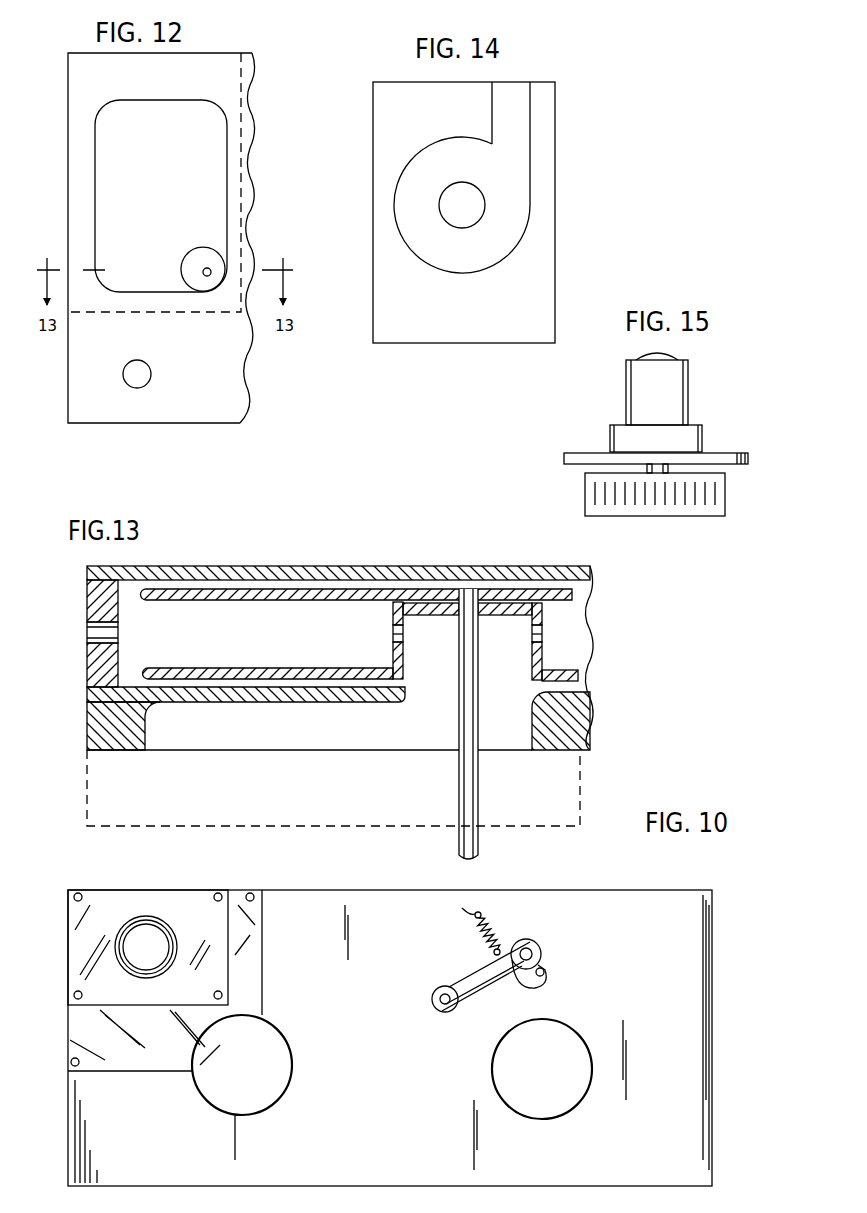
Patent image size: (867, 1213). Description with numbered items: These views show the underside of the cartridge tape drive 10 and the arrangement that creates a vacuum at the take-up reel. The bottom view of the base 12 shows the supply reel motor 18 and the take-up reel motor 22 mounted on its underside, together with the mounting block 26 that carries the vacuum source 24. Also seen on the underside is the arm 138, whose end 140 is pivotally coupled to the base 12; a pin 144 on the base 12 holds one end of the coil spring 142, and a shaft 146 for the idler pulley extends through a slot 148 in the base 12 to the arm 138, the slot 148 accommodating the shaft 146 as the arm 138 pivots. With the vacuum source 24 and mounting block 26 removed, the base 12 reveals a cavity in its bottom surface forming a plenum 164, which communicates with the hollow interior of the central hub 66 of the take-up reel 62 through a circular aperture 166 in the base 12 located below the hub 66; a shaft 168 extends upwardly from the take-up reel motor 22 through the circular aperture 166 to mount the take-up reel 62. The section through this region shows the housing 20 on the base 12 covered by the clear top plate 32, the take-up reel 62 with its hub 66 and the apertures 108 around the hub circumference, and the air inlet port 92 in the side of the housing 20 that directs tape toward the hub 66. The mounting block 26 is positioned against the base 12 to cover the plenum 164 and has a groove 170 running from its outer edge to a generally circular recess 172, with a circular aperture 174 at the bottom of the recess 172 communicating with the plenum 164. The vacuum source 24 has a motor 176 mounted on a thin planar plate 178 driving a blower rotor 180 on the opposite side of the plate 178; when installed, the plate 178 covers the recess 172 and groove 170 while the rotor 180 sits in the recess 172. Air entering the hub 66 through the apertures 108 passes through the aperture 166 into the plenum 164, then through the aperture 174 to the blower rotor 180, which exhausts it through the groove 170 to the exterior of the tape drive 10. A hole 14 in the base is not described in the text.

In FIG. 10, the cartridge tape drive 10 is at (630, 878).
In FIG. 12, the base 12 is at (200, 413).
In FIG. 13, the base 12 is at (97, 700).
In FIG. 10, the base 12 is at (386, 1151).
In FIG. 12, the hole 14 is at (141, 367).
In FIG. 10, the supply reel motor 18 is at (585, 1040).
In FIG. 13, the housing 20 is at (88, 660).
In FIG. 10, the take-up reel motor 22 is at (294, 1073).
In FIG. 15, the vacuum source 24 is at (690, 380).
In FIG. 10, the vacuum source 24 is at (167, 925).
In FIG. 12, the mounting block 26 is at (262, 78).
In FIG. 14, the mounting block 26 is at (535, 292).
In FIG. 13, the mounting block 26 is at (230, 826).
In FIG. 10, the mounting block 26 is at (85, 1024).
In FIG. 13, the top plate 32 is at (205, 567).
In FIG. 13, the take-up reel 62 is at (218, 598).
In FIG. 12, the central hub 66 is at (186, 268).
In FIG. 13, the central hub 66 is at (545, 668).
In FIG. 13, the air inlet port 92 is at (90, 634).
In FIG. 13, the apertures 108 is at (545, 637).
In FIG. 10, the arm 138 is at (474, 992).
In FIG. 10, the end of the arm 140 is at (443, 990).
In FIG. 10, the coil spring 142 is at (483, 922).
In FIG. 10, the pin 144 is at (464, 910).
In FIG. 10, the shaft 146 is at (534, 952).
In FIG. 10, the slot 148 is at (546, 976).
In FIG. 12, the plenum 164 is at (215, 145).
In FIG. 13, the plenum 164 is at (156, 750).
In FIG. 12, the circular aperture 166 is at (204, 248).
In FIG. 13, the circular aperture 166 is at (418, 690).
In FIG. 12, the shaft 168 is at (209, 271).
In FIG. 13, the shaft 168 is at (479, 850).
In FIG. 14, the groove 170 is at (523, 110).
In FIG. 14, the circular recess 172 is at (510, 222).
In FIG. 14, the circular aperture 174 is at (472, 198).
In FIG. 15, the motor 176 is at (637, 372).
In FIG. 15, the plate 178 is at (565, 455).
In FIG. 15, the blower rotor 180 is at (590, 480).